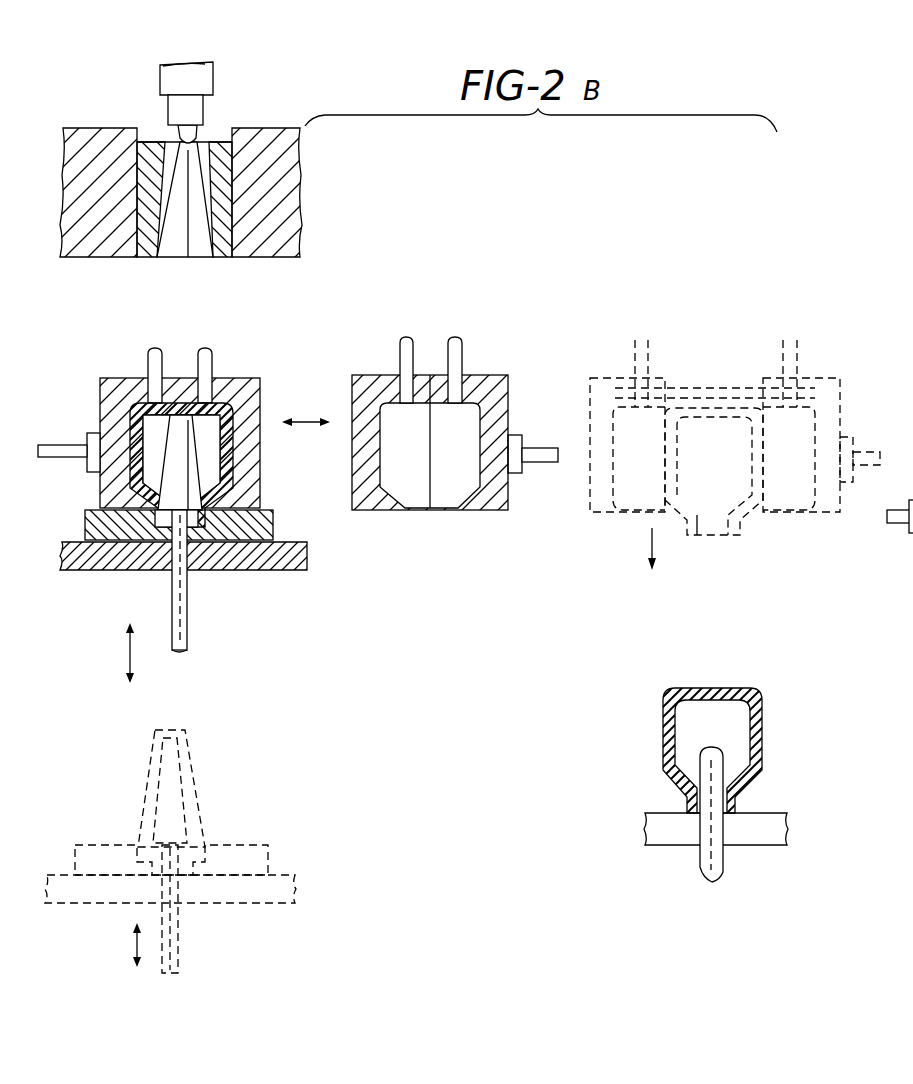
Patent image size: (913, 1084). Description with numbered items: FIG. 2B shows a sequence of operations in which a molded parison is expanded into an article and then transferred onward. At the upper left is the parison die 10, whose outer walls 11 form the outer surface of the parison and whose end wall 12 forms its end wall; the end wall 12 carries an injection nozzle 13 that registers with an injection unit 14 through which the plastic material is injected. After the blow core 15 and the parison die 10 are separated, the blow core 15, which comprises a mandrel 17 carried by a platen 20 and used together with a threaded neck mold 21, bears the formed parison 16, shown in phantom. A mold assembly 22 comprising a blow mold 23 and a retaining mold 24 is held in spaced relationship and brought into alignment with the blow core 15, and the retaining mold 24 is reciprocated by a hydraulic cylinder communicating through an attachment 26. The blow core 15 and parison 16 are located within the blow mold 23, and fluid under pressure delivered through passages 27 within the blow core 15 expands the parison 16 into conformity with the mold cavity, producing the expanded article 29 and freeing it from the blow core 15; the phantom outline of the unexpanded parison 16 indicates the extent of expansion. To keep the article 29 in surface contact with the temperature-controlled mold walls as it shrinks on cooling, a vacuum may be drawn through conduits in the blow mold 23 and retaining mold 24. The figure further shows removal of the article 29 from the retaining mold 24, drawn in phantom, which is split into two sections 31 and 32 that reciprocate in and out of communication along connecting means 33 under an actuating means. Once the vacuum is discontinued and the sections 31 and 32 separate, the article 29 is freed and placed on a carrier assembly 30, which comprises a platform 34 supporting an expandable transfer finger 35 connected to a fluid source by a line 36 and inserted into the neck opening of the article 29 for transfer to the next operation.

The parison die 10 is at (126, 226).
The outer walls 11 is at (200, 222).
The end wall 12 is at (164, 152).
The injection nozzle 13 is at (197, 140).
The injection unit 14 is at (203, 85).
The blow core 15 is at (126, 576).
The parison 16 is at (188, 765).
The mandrel 17 is at (188, 600).
The platen 20 is at (270, 570).
The neck mold 21 is at (268, 527).
The mold assembly 22 is at (284, 365).
The blow mold 23 is at (191, 419).
The retaining mold 24 is at (616, 421).
The attachment 26 is at (522, 437).
The passages 27 is at (181, 620).
The expanded article 29 is at (243, 404).
The carrier assembly 30 is at (768, 847).
The retaining mold section 31 is at (617, 378).
The retaining mold section 32 is at (808, 378).
The connecting means 33 is at (675, 390).
The platform 34 is at (780, 828).
The expandable transfer finger 35 is at (710, 770).
The line 36 is at (704, 869).